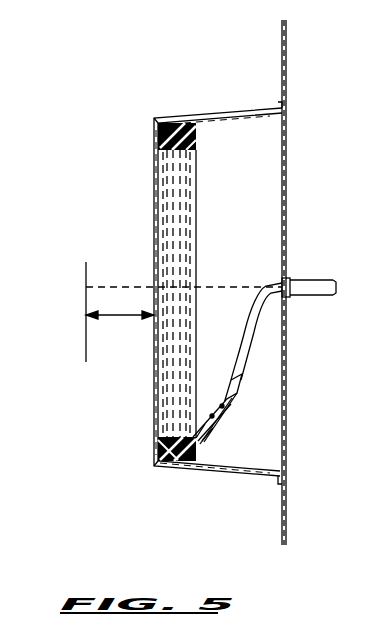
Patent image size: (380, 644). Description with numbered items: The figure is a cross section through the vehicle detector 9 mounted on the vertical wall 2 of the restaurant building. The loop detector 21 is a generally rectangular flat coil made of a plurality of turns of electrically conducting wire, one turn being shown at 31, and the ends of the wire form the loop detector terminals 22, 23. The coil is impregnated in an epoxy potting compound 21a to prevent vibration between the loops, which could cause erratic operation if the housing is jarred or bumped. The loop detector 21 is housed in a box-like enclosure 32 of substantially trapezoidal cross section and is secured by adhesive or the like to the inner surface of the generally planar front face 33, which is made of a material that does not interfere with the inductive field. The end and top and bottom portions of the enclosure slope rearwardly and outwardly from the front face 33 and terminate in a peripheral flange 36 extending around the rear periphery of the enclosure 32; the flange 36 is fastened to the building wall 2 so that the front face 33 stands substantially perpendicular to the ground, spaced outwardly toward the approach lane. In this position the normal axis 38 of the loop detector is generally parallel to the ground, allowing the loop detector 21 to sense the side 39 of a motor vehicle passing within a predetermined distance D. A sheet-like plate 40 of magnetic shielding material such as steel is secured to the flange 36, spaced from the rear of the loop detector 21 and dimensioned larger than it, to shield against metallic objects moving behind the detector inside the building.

The vertical wall 2 is at (282, 53).
The vehicle detector 9 is at (185, 311).
The loop detector 21 is at (186, 268).
The epoxy potting compound 21a is at (196, 178).
The loop detector terminal 22 is at (209, 421).
The loop detector terminal 23 is at (222, 416).
The turn of electrically conducting wire 31 is at (168, 401).
The box-like enclosure 32 is at (222, 116).
The front face 33 is at (154, 176).
The peripheral flange 36 is at (279, 103).
The normal axis of the loop detector 38 is at (120, 286).
The side of motor vehicle 39 is at (86, 348).
The sheet-like plate 40 is at (288, 197).
The predetermined distance D is at (120, 307).